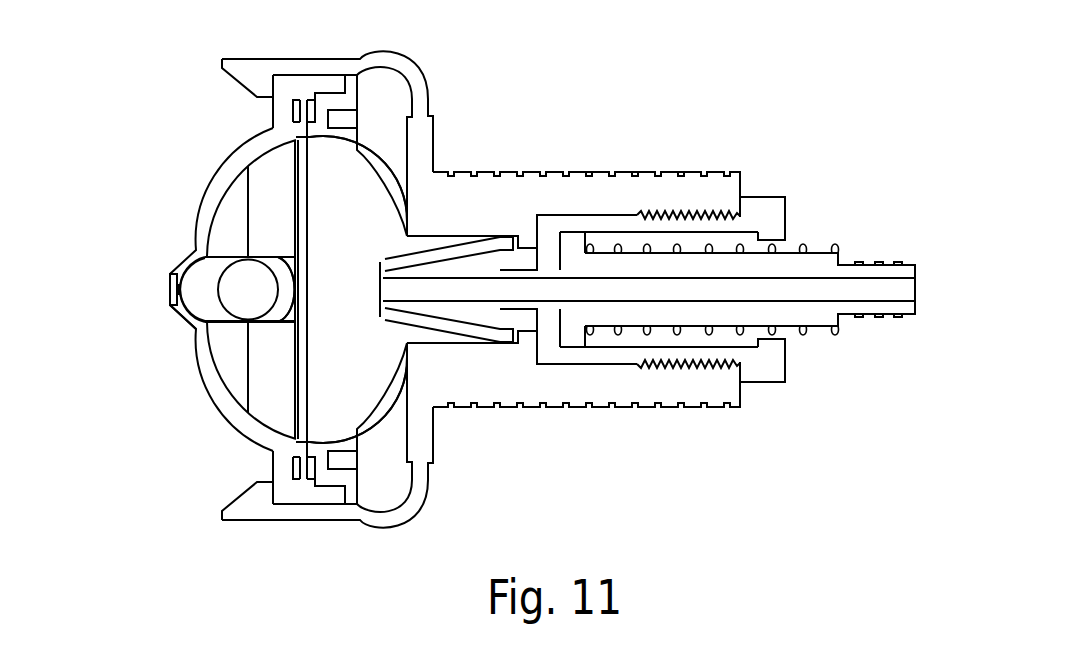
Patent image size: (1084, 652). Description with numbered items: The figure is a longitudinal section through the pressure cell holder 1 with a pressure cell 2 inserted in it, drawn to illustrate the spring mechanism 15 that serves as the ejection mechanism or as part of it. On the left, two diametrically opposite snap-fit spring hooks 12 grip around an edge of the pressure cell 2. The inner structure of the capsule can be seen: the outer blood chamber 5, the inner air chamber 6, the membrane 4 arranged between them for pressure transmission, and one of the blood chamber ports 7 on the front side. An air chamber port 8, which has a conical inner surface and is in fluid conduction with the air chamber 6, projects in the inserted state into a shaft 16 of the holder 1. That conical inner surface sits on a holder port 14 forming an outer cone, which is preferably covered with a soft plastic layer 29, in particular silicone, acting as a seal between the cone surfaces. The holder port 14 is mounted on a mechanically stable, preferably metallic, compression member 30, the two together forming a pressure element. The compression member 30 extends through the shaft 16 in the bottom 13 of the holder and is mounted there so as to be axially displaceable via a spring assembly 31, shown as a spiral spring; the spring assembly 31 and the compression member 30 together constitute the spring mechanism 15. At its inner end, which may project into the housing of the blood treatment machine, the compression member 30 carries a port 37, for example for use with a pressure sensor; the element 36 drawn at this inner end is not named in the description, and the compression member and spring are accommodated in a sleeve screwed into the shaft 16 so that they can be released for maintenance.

The pressure cell holder 1 is at (190, 55).
The pressure cell 2 is at (196, 380).
The membrane 4 is at (305, 408).
The blood chamber 5 is at (240, 216).
The air chamber 6 is at (345, 178).
The blood chamber port 7 is at (243, 293).
The air chamber port 8 is at (458, 338).
The spring hook 12 is at (263, 70).
The bottom 13 is at (412, 440).
The holder port 14 is at (540, 262).
The spring mechanism 15 is at (680, 233).
The shaft 16 is at (630, 184).
The soft plastic layer 29 is at (468, 260).
The compression member 30 is at (793, 310).
The spring assembly 31 is at (703, 330).
The tube 36 is at (877, 292).
The port 37 is at (873, 272).